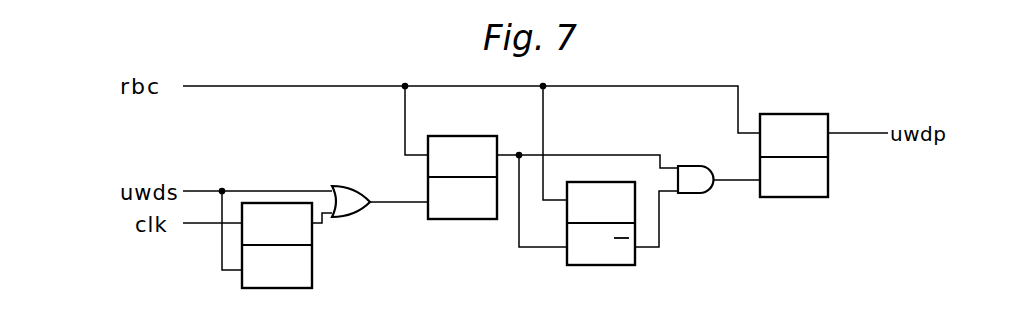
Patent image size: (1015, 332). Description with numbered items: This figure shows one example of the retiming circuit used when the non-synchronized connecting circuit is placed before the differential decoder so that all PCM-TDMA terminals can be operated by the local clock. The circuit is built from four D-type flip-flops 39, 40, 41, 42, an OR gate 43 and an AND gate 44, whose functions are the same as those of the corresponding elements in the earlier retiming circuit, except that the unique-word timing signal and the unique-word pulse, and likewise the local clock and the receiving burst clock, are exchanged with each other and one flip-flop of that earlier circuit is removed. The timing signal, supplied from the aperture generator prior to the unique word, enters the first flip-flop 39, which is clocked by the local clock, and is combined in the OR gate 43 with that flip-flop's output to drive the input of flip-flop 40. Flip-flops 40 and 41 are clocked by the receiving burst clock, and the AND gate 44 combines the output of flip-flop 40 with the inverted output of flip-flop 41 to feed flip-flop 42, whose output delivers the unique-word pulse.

The D-type flip-flop 39 is at (268, 203).
The D-type flip-flop 40 is at (465, 136).
The D-type flip-flop 41 is at (590, 182).
The D-type flip-flop 42 is at (793, 114).
The OR gate 43 is at (357, 186).
The AND gate 44 is at (690, 166).